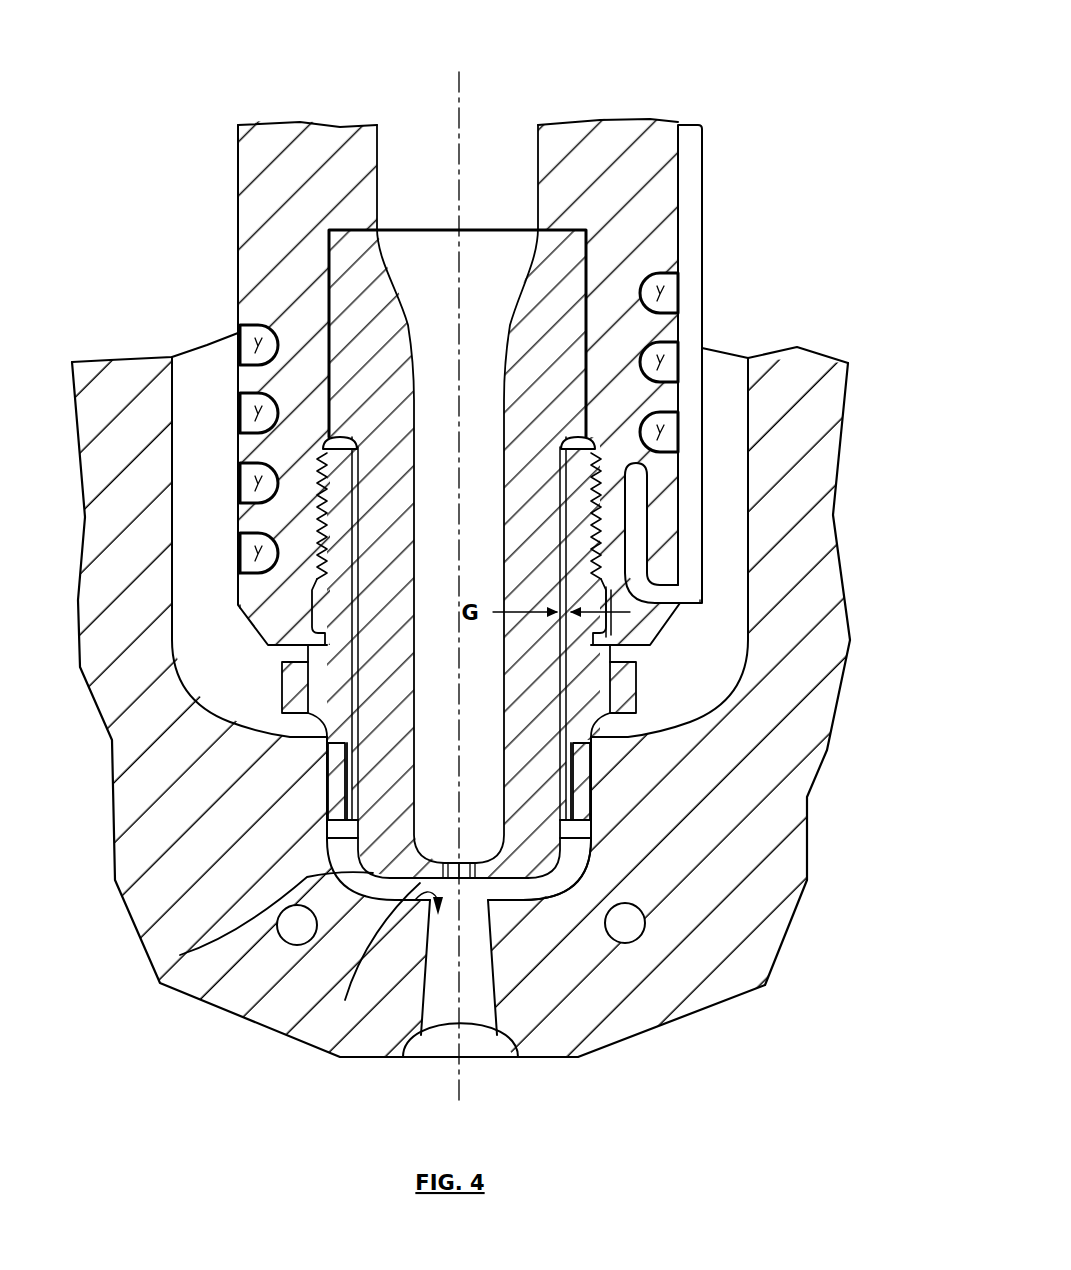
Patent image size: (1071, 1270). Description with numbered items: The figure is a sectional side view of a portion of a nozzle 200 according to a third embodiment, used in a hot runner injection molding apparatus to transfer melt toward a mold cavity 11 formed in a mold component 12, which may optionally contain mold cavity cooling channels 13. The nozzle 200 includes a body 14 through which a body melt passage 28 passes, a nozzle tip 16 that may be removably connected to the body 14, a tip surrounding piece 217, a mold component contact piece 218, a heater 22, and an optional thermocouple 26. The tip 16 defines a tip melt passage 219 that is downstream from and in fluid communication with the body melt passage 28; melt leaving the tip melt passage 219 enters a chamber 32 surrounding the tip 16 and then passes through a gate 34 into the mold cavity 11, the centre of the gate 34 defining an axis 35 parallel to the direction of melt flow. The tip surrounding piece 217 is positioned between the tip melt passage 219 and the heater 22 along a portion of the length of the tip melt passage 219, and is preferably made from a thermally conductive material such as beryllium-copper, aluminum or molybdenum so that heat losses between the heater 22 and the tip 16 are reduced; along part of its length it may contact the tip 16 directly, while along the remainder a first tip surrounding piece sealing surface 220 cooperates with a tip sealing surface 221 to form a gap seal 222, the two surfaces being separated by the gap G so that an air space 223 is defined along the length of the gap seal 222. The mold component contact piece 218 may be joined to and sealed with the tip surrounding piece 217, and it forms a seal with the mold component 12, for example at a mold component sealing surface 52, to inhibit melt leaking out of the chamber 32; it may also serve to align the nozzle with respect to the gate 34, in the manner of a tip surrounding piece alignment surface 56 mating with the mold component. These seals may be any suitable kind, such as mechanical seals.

The nozzle 200 is at (648, 62).
The mold cavity 11 is at (428, 1047).
The mold component 12 is at (640, 1003).
The mold cavity cooling channels 13 is at (285, 942).
The body 14 is at (653, 140).
The tip 16 is at (563, 298).
The heater 22 is at (660, 366).
The thermocouple 26 is at (693, 312).
The body melt passage 28 is at (485, 150).
The chamber 32 is at (180, 955).
The gate 34 is at (312, 1036).
The axis 35 is at (463, 870).
The mold component sealing surface 52 is at (607, 858).
The tip surrounding piece alignment surface 56 is at (600, 740).
The tip surrounding piece 217 is at (275, 686).
The mold component contact piece 218 is at (597, 805).
The tip melt passage 219 is at (414, 246).
The first tip surrounding piece sealing surface 220 is at (598, 650).
The tip sealing surface 221 is at (640, 672).
The gap seal 222 is at (625, 616).
The air space 223 is at (665, 590).